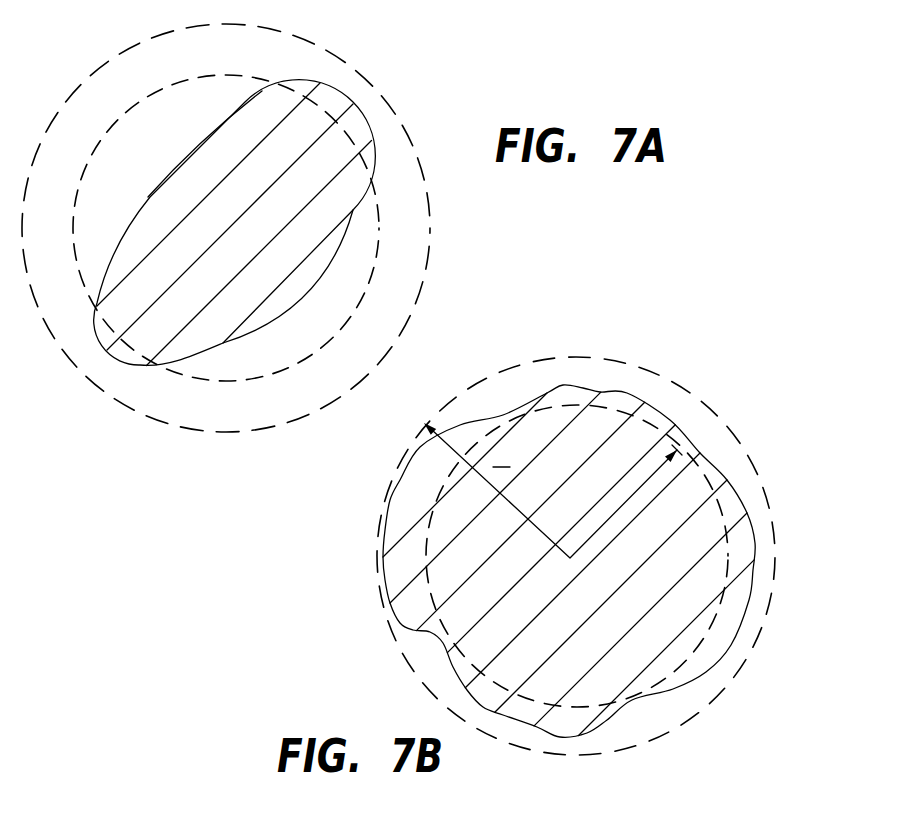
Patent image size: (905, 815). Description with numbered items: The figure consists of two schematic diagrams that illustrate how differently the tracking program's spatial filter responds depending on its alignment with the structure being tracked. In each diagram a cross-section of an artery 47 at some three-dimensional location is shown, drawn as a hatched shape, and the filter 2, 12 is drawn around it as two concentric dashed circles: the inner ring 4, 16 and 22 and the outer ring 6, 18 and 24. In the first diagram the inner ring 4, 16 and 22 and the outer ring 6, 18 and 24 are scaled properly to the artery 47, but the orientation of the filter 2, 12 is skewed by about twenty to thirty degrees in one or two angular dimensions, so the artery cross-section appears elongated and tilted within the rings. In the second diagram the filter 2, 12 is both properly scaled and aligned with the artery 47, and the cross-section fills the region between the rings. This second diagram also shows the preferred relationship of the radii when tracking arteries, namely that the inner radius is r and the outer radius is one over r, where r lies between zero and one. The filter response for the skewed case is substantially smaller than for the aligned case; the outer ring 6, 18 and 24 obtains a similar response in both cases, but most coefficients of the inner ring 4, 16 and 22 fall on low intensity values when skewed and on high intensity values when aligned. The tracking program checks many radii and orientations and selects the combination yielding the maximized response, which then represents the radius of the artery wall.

In FIG. 7A, the filter 2 is at (300, 245).
In FIG. 7B, the filter 2 is at (511, 566).
In FIG. 7A, the filter 12 is at (131, 12).
In FIG. 7B, the filter 12 is at (724, 374).
In FIG. 7A, the inner ring 4 is at (222, 283).
In FIG. 7B, the inner ring 4 is at (471, 556).
In FIG. 7A, the inner ring 16 is at (222, 283).
In FIG. 7B, the inner ring 16 is at (471, 556).
In FIG. 7A, the inner ring 22 is at (205, 373).
In FIG. 7B, the inner ring 22 is at (440, 644).
In FIG. 7A, the outer ring 6 is at (300, 228).
In FIG. 7B, the outer ring 6 is at (578, 568).
In FIG. 7A, the outer ring 18 is at (300, 228).
In FIG. 7B, the outer ring 18 is at (660, 733).
In FIG. 7A, the outer ring 24 is at (425, 278).
In FIG. 7A, the artery 47 is at (360, 118).
In FIG. 7B, the artery 47 is at (383, 542).